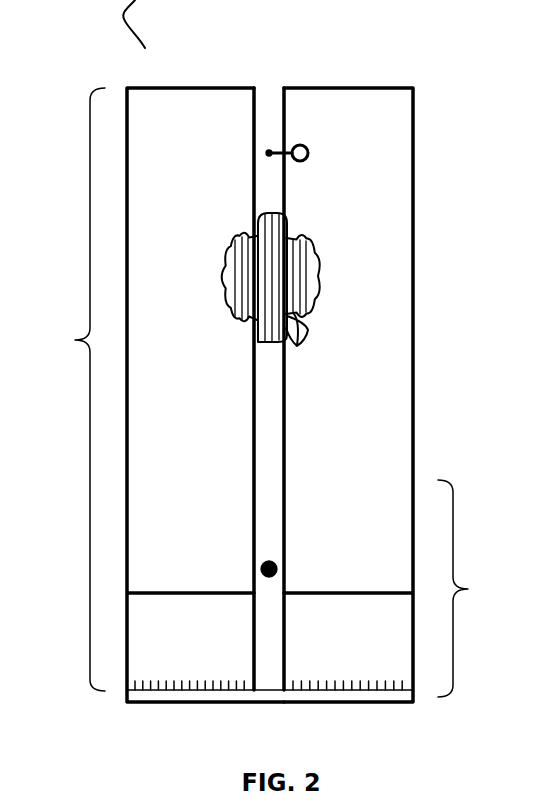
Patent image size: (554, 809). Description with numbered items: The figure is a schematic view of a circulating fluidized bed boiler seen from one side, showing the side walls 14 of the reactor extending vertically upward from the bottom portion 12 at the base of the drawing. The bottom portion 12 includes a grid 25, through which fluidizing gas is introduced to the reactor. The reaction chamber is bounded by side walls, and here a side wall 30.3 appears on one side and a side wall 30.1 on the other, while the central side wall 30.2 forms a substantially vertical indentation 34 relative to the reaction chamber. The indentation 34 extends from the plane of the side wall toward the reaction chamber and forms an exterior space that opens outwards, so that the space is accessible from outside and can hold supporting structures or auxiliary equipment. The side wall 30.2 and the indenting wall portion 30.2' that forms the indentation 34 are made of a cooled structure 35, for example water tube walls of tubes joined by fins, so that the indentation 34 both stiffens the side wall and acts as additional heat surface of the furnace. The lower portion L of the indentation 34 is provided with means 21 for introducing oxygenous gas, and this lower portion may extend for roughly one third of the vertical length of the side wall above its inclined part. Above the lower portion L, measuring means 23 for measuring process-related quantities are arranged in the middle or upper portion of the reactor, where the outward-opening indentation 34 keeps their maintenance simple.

The bottom portion 12 is at (178, 692).
The side walls 14 is at (74, 389).
The means for introducing oxygenous gas 21 is at (278, 569).
The measuring means 23 is at (312, 152).
The grid 25 is at (372, 690).
The side wall 30.1 is at (413, 288).
The side wall 30.2 is at (370, 254).
The indenting wall portion 30.2' is at (153, 235).
The side wall 30.3 is at (127, 377).
The indentation 34 is at (267, 142).
The cooled structure 35 is at (297, 346).
The lower portion L is at (464, 588).